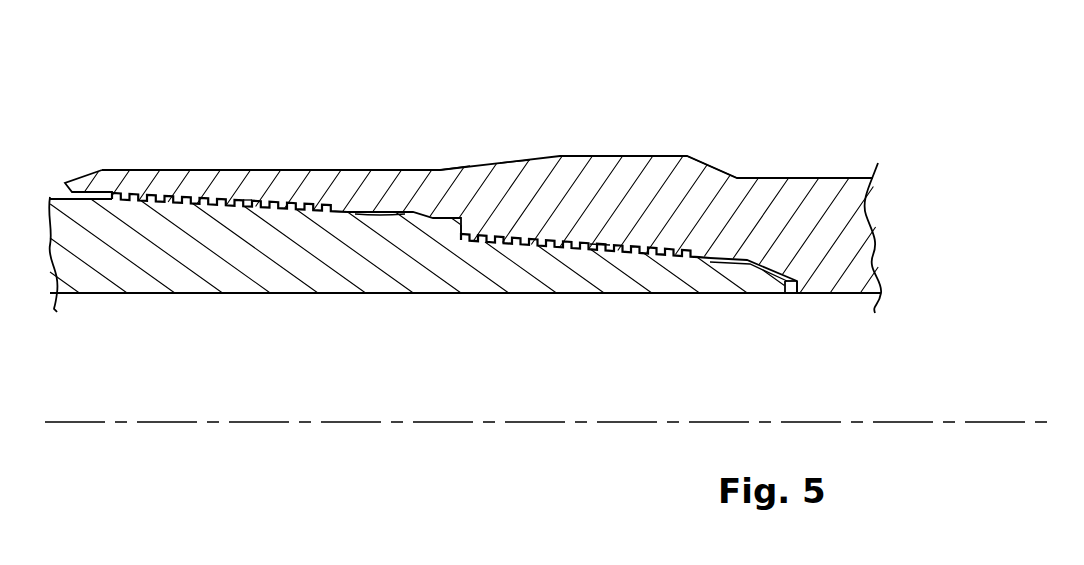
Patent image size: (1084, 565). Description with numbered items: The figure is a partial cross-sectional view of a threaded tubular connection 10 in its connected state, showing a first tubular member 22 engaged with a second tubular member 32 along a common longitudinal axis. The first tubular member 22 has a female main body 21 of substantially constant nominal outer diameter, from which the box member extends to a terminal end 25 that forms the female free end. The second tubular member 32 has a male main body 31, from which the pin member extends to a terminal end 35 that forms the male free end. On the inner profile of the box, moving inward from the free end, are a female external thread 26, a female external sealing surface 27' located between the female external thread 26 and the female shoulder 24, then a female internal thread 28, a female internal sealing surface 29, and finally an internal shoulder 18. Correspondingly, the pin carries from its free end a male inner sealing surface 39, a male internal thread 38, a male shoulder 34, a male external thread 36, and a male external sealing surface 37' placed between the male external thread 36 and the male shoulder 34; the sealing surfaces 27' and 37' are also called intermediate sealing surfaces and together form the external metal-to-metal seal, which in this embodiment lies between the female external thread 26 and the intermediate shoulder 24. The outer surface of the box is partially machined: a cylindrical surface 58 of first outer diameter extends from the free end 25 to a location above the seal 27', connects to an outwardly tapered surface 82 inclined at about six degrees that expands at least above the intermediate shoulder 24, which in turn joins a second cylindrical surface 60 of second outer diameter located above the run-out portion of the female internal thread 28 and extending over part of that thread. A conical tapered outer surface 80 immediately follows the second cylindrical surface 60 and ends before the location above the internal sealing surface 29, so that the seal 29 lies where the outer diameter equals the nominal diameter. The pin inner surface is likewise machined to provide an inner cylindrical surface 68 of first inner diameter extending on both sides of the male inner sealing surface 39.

The threaded tubular connection 10 is at (581, 30).
The internal shoulder 18 is at (798, 280).
The female main body 21 is at (835, 226).
The first tubular member 22 is at (780, 168).
The female shoulder 24 is at (456, 170).
The terminal end 25 is at (69, 182).
The female external thread 26 is at (250, 200).
The female external sealing surface 27' is at (404, 173).
The female internal thread 28 is at (601, 247).
The female internal sealing surface 29 is at (768, 280).
The male main body 31 is at (95, 255).
The second tubular member 32 is at (124, 310).
The male shoulder 34 is at (458, 232).
The terminal end 35 is at (780, 281).
The male external thread 36 is at (223, 203).
The male external sealing surface 37' is at (362, 280).
The male internal thread 38 is at (580, 246).
The male inner sealing surface 39 is at (813, 178).
The cylindrical surface 58 is at (360, 168).
The cylindrical surface 60 is at (612, 157).
The inner cylindrical surface 68 is at (721, 276).
The tapered outer surface 80 is at (700, 163).
The outwardly tapered surface 82 is at (515, 159).